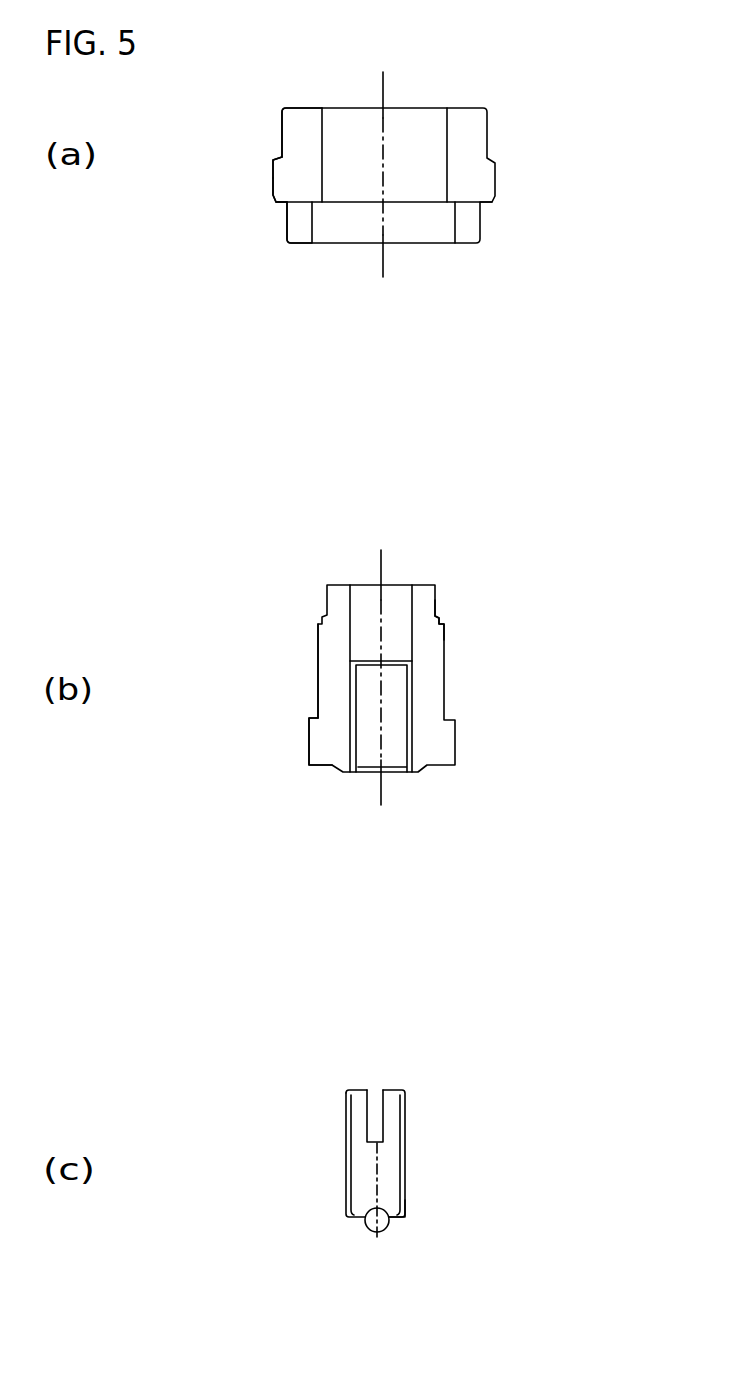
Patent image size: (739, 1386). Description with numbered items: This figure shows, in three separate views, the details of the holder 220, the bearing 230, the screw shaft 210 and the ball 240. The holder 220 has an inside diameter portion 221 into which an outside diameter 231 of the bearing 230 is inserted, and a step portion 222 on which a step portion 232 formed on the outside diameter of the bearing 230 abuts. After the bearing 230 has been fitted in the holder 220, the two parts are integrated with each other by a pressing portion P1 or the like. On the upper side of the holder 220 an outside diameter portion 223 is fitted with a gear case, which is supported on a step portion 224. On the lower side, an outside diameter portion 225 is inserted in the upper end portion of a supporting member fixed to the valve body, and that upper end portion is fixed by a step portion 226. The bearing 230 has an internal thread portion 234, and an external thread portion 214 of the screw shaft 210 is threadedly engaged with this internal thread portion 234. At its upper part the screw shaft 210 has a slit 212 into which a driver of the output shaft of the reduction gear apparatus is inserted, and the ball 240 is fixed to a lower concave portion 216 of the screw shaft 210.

The holder 220 is at (485, 175).
The inside diameter portion 221 is at (333, 143).
The step portion 222 is at (445, 205).
The outside diameter portion 223 is at (282, 137).
The step portion 224 is at (273, 152).
The outside diameter portion 225 is at (287, 222).
The step portion 226 is at (276, 203).
The bearing 230 is at (437, 663).
The outside diameter 231 is at (318, 658).
The step portion 232 is at (318, 716).
The internal thread portion 234 is at (403, 750).
The pressing portion P1 is at (437, 620).
The screw shaft 210 is at (395, 1157).
The slit 212 is at (383, 1097).
The external thread portion 214 is at (347, 1150).
The lower concave portion 216 is at (390, 1222).
The ball 240 is at (366, 1224).